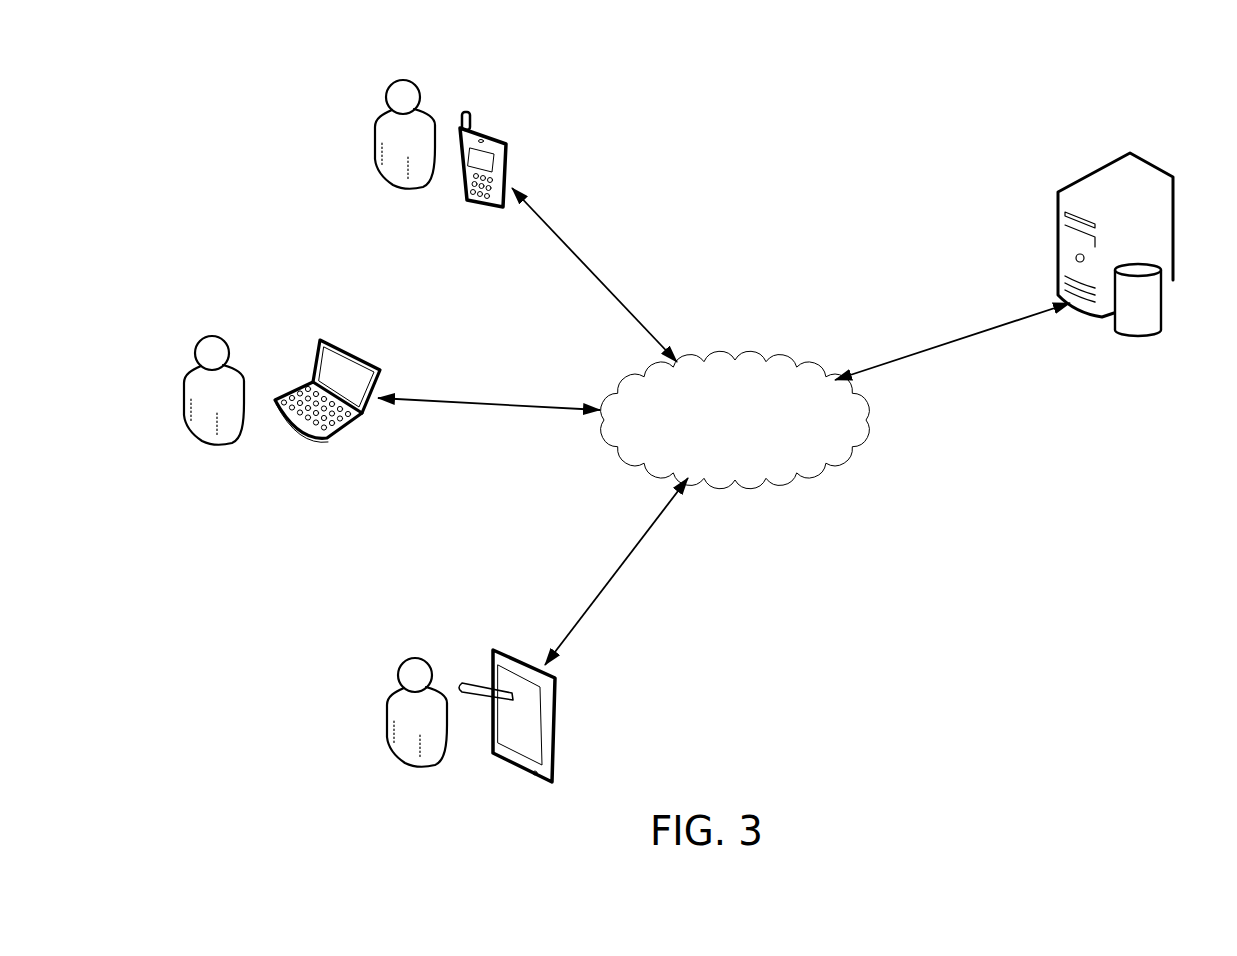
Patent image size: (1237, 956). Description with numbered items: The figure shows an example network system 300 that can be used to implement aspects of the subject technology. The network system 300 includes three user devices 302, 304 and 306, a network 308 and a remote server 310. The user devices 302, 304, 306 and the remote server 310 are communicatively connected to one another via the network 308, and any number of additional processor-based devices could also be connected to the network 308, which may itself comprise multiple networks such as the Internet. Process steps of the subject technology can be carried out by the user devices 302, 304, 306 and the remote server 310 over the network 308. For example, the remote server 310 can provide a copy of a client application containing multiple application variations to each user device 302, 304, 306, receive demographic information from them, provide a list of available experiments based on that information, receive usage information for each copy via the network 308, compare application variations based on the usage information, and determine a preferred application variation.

The network system 300 is at (792, 87).
The user device 302 is at (495, 135).
The user device 304 is at (380, 370).
The user device 306 is at (502, 645).
The network 308 is at (733, 356).
The remote server 310 is at (1150, 163).